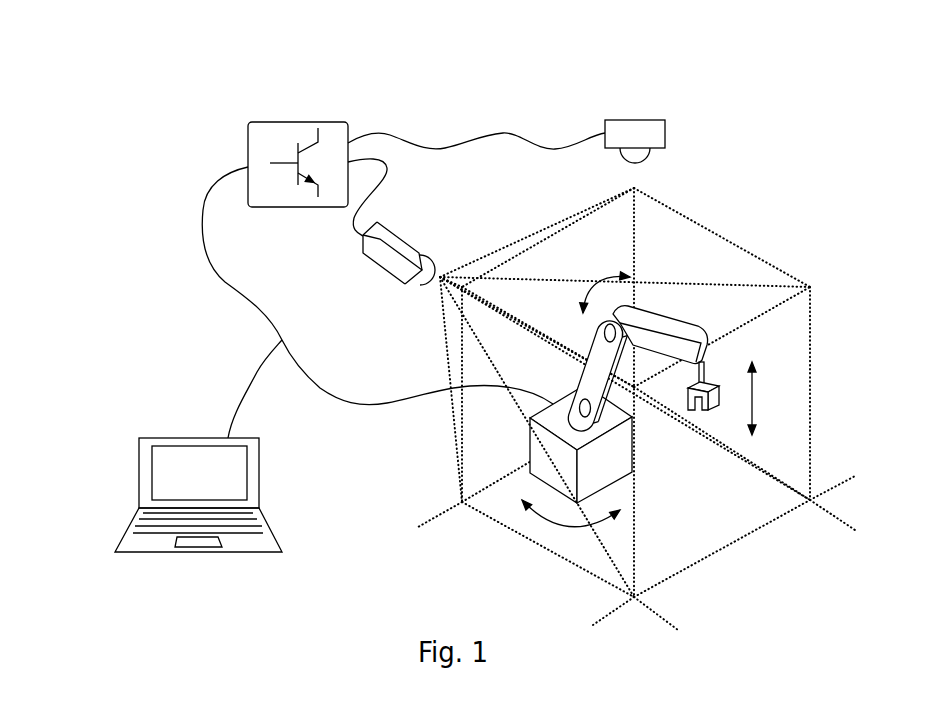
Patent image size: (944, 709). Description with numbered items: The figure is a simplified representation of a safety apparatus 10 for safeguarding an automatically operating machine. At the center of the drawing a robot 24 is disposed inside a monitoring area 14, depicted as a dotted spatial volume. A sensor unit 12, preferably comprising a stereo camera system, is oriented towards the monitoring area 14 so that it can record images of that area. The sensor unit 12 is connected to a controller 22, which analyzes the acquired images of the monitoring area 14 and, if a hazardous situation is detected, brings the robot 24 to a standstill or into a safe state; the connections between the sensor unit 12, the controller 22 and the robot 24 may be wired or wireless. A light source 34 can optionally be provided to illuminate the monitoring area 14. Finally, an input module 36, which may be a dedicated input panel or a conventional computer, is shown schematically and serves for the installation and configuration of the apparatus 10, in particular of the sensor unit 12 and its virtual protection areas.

The apparatus 10 is at (97, 56).
The sensor unit 12 is at (385, 257).
The monitoring area 14 is at (703, 225).
The controller 22 is at (290, 122).
The robot 24 is at (678, 328).
The light source 34 is at (635, 120).
The input module 36 is at (166, 438).